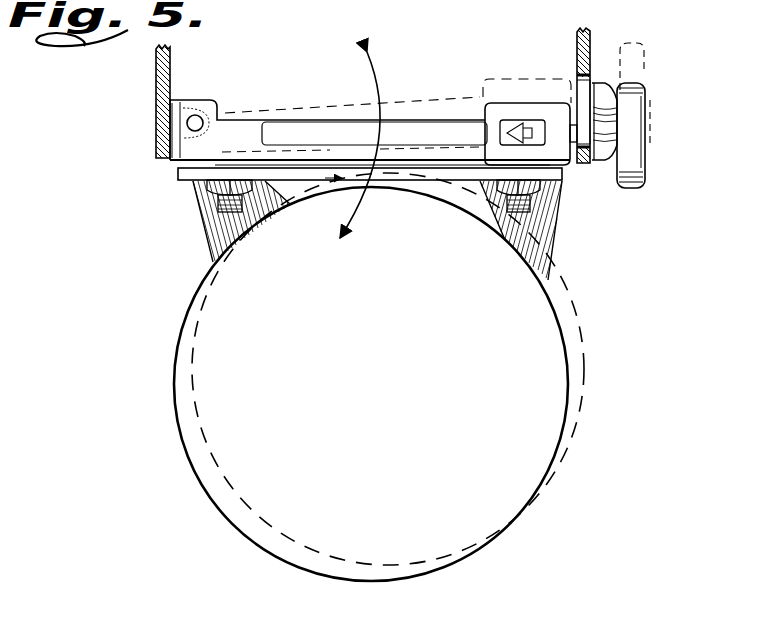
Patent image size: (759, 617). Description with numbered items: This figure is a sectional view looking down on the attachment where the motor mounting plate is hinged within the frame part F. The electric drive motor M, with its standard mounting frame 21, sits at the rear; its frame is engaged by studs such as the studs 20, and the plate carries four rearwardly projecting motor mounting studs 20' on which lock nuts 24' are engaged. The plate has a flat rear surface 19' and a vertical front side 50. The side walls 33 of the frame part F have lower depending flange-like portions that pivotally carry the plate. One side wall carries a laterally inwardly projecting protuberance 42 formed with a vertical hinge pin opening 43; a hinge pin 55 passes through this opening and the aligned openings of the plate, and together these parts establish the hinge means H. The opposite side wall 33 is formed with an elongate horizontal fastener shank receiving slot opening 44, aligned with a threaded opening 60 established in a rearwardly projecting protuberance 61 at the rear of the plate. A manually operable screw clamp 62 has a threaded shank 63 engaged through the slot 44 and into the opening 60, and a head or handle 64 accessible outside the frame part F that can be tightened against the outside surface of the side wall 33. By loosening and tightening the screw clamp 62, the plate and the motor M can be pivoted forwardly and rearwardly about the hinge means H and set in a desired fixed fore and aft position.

The electric drive motor M is at (391, 337).
The side walls 33 is at (157, 68).
The frame part F is at (152, 89).
The protuberance 42 is at (204, 102).
The hinge pin 55 is at (187, 125).
The hinge pin opening 43 is at (203, 128).
The hinge means H is at (222, 98).
The front side or surface 50 is at (425, 148).
The rearwardly projecting protuberance 61 is at (486, 106).
The threaded opening 60 is at (548, 128).
The fastener shank receiving slot opening 44 is at (598, 97).
The threaded shank 63 is at (580, 134).
The head or handle 64 is at (646, 158).
The screw clamp 62 is at (632, 191).
The studs 20 is at (339, 190).
The lock nuts 24' is at (333, 187).
The mounting frame 21 is at (195, 215).
The rear surface 19' is at (390, 145).
The motor mounting studs 20' is at (528, 16).